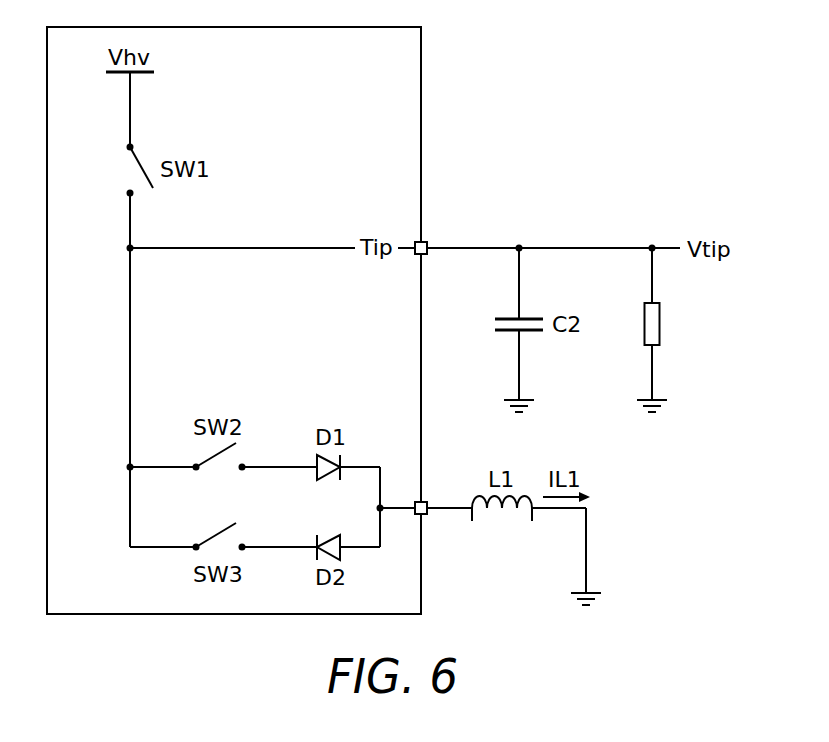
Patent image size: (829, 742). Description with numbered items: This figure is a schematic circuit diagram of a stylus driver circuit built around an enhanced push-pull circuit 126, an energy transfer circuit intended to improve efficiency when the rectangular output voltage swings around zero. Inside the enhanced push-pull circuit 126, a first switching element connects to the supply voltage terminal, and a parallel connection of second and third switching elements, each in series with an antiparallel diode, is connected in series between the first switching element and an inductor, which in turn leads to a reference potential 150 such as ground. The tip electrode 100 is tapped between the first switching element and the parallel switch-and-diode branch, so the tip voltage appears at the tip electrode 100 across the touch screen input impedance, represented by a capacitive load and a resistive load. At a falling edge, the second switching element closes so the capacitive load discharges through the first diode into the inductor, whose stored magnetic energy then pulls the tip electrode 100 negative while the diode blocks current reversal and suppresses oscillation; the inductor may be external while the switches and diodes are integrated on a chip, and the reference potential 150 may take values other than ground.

The enhanced push-pull circuit 126 is at (422, 38).
The tip electrode 100 is at (415, 243).
The reference potential 150 is at (669, 431).